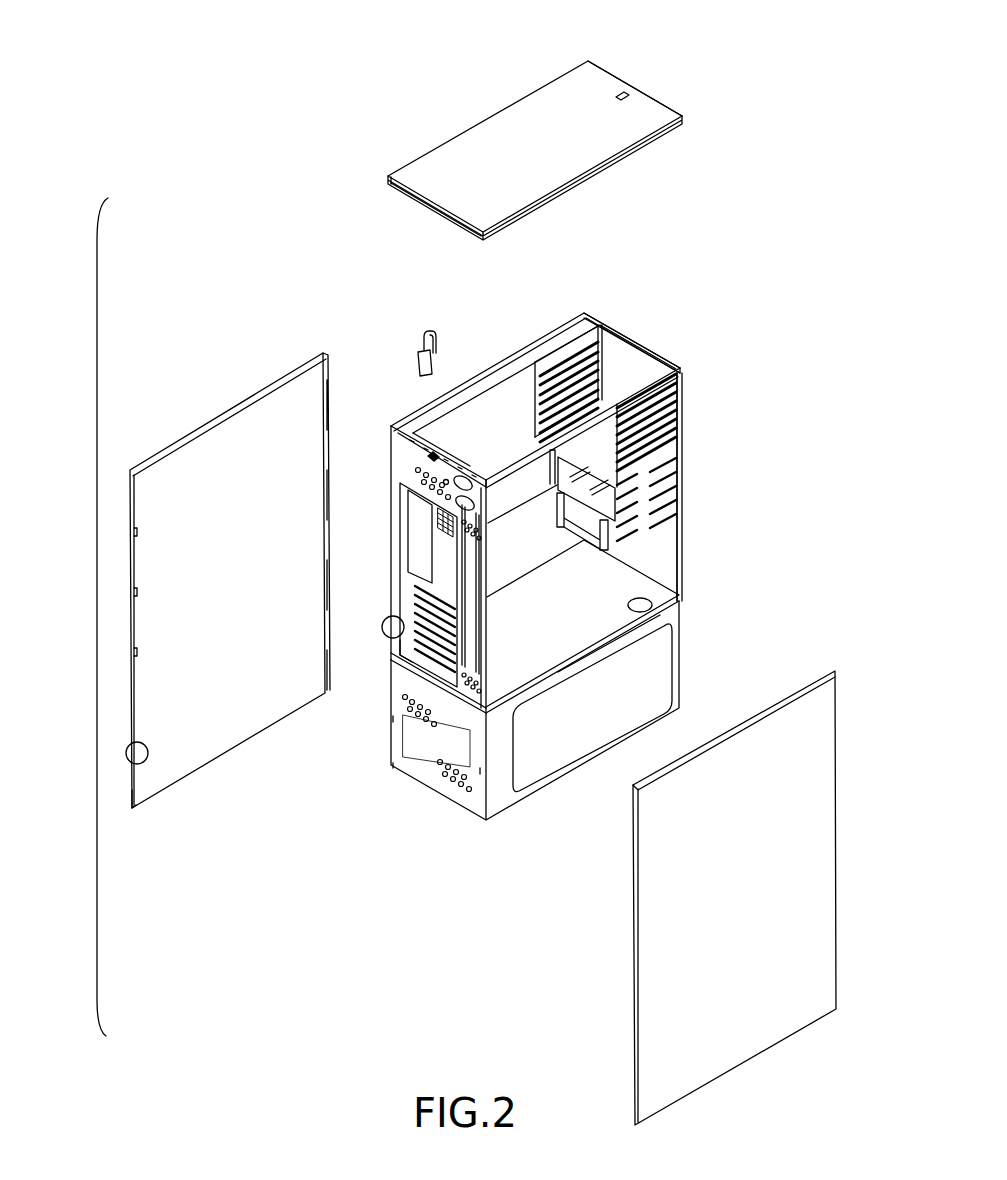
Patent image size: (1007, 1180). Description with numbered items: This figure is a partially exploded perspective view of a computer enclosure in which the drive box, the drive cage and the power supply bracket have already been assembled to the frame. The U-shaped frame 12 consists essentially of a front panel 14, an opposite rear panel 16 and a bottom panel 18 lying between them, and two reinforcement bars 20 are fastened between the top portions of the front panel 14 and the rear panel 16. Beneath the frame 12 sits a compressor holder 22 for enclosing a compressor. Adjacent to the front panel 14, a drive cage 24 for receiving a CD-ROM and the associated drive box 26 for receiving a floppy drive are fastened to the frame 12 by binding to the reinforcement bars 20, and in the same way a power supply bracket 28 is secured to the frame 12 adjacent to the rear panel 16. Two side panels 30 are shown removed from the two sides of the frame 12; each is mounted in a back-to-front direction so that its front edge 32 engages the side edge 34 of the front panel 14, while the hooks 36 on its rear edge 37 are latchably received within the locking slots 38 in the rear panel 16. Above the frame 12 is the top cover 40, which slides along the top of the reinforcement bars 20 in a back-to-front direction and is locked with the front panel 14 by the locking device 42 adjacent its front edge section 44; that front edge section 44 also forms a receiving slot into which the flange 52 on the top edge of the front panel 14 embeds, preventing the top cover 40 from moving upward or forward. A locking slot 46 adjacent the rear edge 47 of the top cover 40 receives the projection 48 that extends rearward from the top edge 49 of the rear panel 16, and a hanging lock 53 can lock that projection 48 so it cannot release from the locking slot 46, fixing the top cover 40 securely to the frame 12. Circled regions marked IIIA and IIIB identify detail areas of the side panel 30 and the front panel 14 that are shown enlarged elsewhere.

The U-shaped frame 12 is at (692, 548).
The front panel 14 is at (666, 580).
The rear panel 16 is at (391, 425).
The bottom panel 18 is at (595, 612).
The reinforcement bars 20 is at (537, 352).
The compressor holder 22 is at (533, 752).
The drive cage 24 is at (592, 328).
The drive box 26 is at (680, 440).
The power supply bracket 28 is at (467, 427).
The side panels 30 is at (212, 465).
The front edge 32 is at (325, 428).
The side edge 34 is at (662, 536).
The hooks 36 is at (148, 746).
The rear edge 37 is at (135, 778).
The locking slots 38 is at (403, 657).
The top cover 40 is at (527, 118).
The locking device 42 is at (622, 92).
The front edge section 44 is at (657, 99).
The locking slot 46 is at (437, 204).
The rear edge 47 is at (407, 182).
The projection 48 is at (428, 457).
The top edge 49 is at (442, 486).
The flange 52 is at (636, 357).
The hanging lock 53 is at (437, 321).
The detail circle IIIA is at (127, 748).
The detail circle IIIB is at (394, 616).